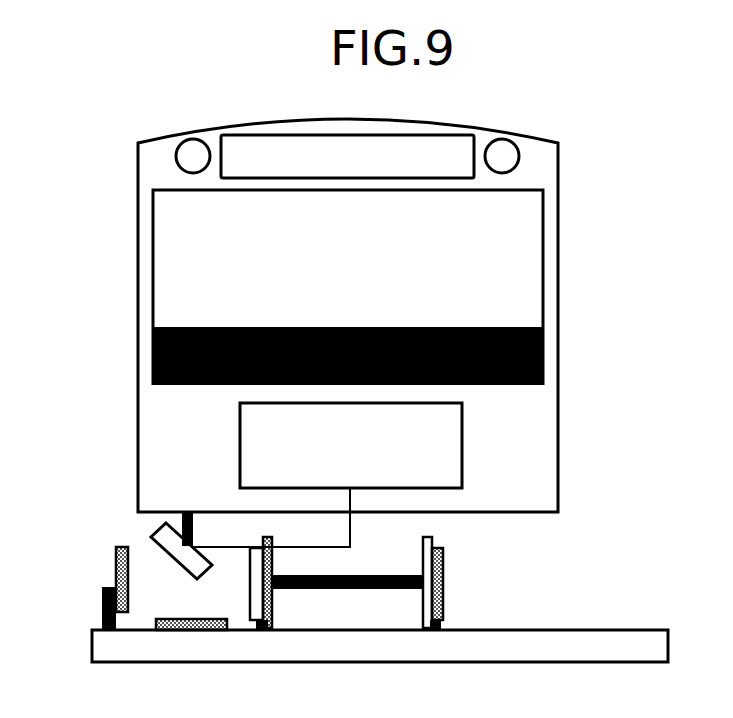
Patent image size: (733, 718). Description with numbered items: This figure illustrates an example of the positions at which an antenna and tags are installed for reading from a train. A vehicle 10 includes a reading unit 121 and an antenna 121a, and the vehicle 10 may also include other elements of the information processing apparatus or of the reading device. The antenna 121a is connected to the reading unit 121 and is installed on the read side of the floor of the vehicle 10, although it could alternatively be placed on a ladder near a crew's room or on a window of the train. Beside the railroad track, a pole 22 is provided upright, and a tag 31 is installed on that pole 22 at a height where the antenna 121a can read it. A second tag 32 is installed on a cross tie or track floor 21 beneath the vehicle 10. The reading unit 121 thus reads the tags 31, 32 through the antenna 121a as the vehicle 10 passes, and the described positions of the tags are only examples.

The vehicle 10 is at (558, 265).
The reading unit 121 is at (462, 425).
The antenna 121a is at (157, 543).
The tag 31 is at (116, 560).
The pole 22 is at (102, 606).
The tag 32 is at (198, 619).
The cross tie or track floor 21 is at (598, 630).